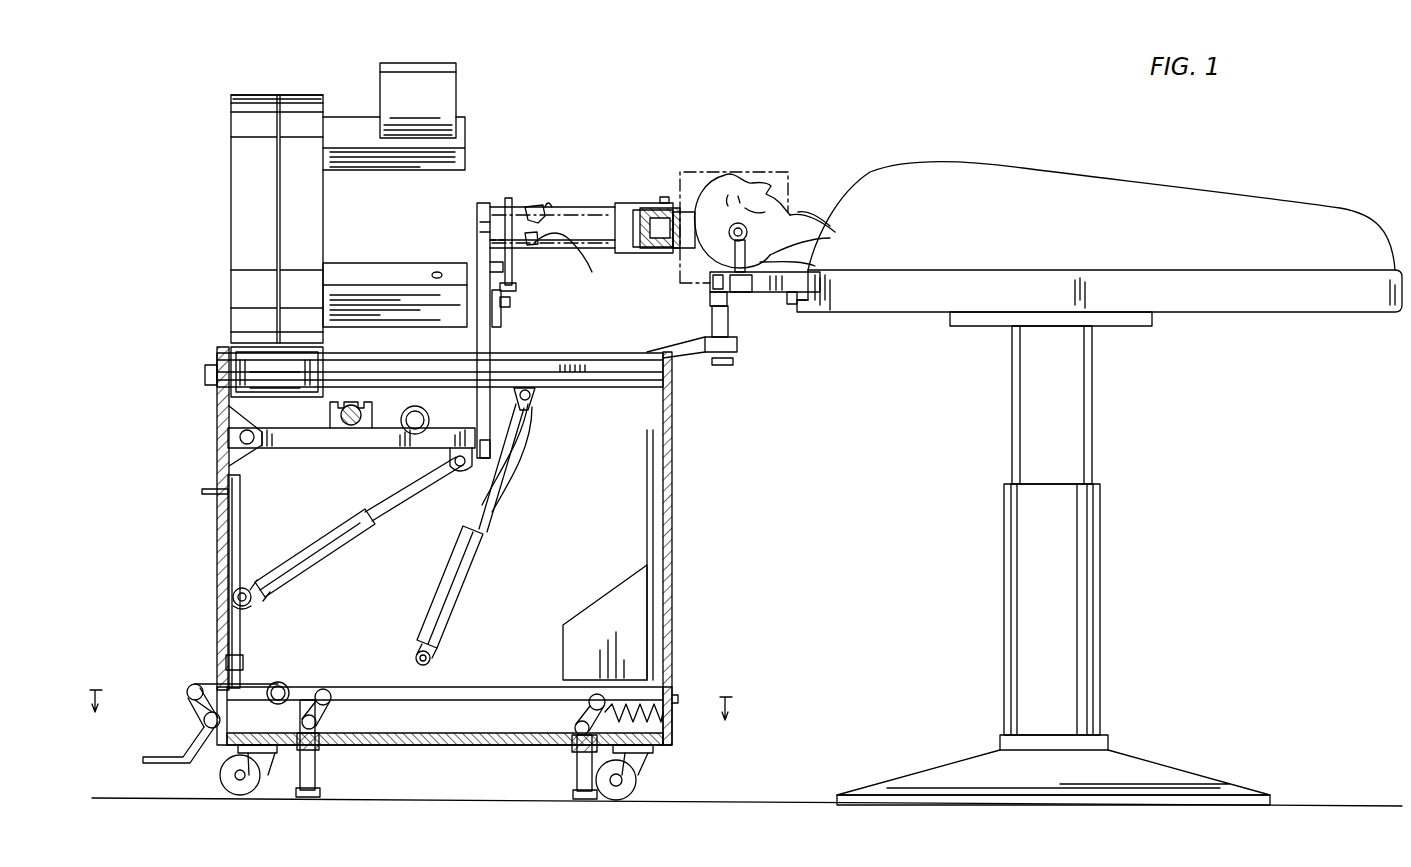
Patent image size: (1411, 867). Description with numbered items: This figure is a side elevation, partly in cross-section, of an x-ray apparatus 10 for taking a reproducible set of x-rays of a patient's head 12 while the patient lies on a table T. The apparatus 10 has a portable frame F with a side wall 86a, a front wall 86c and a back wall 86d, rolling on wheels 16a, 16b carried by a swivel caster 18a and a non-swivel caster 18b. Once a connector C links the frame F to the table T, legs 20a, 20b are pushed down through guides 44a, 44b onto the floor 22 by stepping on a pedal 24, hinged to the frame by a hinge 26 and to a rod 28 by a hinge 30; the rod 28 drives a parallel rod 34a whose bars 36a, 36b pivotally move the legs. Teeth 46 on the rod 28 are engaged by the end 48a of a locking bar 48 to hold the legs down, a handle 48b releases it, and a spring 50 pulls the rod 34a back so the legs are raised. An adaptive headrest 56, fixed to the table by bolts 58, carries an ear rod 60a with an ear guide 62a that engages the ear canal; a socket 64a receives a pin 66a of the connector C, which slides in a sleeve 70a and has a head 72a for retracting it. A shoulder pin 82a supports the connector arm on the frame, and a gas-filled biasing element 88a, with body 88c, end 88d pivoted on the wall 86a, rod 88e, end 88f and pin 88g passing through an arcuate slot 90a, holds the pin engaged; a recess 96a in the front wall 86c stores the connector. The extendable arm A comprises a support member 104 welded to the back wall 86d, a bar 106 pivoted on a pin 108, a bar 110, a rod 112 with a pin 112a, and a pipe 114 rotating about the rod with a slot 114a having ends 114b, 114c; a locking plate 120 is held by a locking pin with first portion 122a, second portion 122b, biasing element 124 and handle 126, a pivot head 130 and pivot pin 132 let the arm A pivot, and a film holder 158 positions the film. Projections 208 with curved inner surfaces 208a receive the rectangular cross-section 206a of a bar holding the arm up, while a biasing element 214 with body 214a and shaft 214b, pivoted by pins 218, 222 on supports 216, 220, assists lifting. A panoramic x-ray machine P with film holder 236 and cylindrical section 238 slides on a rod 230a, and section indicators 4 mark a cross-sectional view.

The x-ray apparatus 10 is at (636, 79).
The patient's head 12 is at (725, 178).
The wheel 16a is at (220, 778).
The wheel 16b is at (636, 786).
The swivel caster 18a is at (268, 760).
The non-swivel caster 18b is at (653, 752).
The leg 20a is at (316, 781).
The leg 20b is at (577, 776).
The floor 22 is at (1325, 805).
The pedal 24 is at (143, 760).
The hinge 26 is at (204, 719).
The rod 28 is at (252, 690).
The hinge 30 is at (188, 686).
The rod 34a is at (496, 687).
The bar 36a is at (331, 712).
The bar 36b is at (589, 710).
The guide 44a is at (322, 746).
The guide 44b is at (570, 745).
The teeth 46 is at (226, 660).
The locking bar 48 is at (241, 506).
The end 48a is at (277, 698).
The handle 48b is at (204, 490).
The spring 50 is at (662, 710).
The adaptive headrest 56 is at (806, 270).
The bolts 58 is at (798, 302).
The ear rod 60a is at (747, 233).
The ear guide 62a is at (798, 212).
The socket 64a is at (712, 291).
The pin 66a is at (732, 300).
The sleeve 70a is at (738, 346).
The head 72a is at (722, 366).
The shoulder pin 82a is at (421, 412).
The side wall 86a is at (625, 545).
The front wall 86c is at (673, 432).
The back wall 86d is at (217, 537).
The biasing element 88a is at (470, 566).
The body 88c is at (430, 614).
The end 88d is at (416, 658).
The rod 88e is at (488, 516).
The end 88f is at (531, 396).
The pin 88g is at (528, 418).
The arcuate slot 90a is at (514, 482).
The recess 96a is at (655, 606).
The support member 104 is at (235, 412).
The bar 106 is at (310, 449).
The pin 108 is at (240, 437).
The bar 110 is at (492, 342).
The rod 112 is at (484, 203).
The pin 112a is at (533, 206).
The pipe 114 is at (560, 207).
The slot 114a is at (536, 246).
The end 114b is at (548, 207).
The end 114c is at (592, 262).
The locking plate 120 is at (482, 226).
The first portion 122a is at (516, 286).
The second portion 122b is at (506, 302).
The biasing element 124 is at (440, 312).
The handle 126 is at (500, 266).
The pivot head 130 is at (625, 203).
The pivot pin 132 is at (666, 198).
The film holder 158 is at (788, 173).
The rectangular cross-section 206a is at (349, 404).
The projections 208 is at (330, 413).
The curved inner surface 208a is at (352, 405).
The biasing element 214 is at (316, 557).
The body 214a is at (310, 556).
The shaft 214b is at (388, 504).
The support 216 is at (238, 602).
The pin 218 is at (236, 593).
The support 220 is at (450, 462).
The pin 222 is at (460, 468).
The rod 230a is at (602, 387).
The x-ray film holder 236 is at (456, 75).
The cylindrical section 238 is at (300, 95).
The section line 4- 4 is at (409, 722).
The panoramic x-ray machine P is at (231, 185).
The extendable arm A is at (656, 244).
The connector C is at (736, 362).
The frame F is at (673, 467).
The table T is at (937, 312).